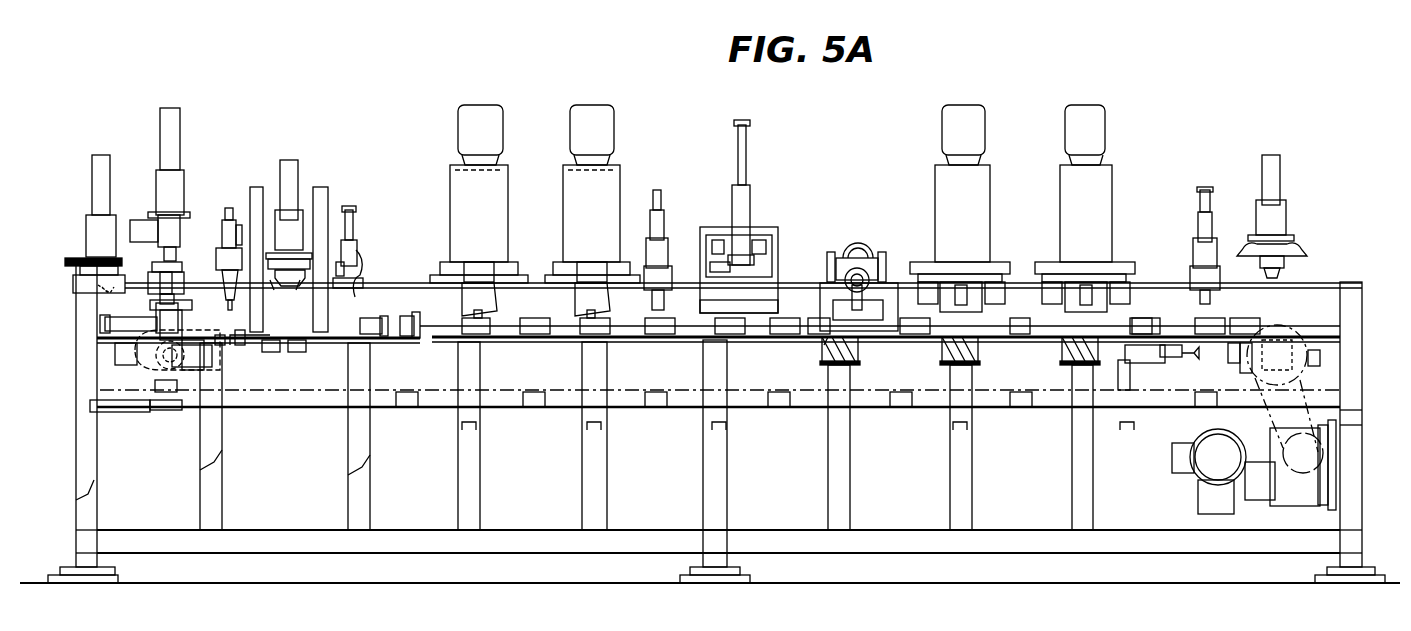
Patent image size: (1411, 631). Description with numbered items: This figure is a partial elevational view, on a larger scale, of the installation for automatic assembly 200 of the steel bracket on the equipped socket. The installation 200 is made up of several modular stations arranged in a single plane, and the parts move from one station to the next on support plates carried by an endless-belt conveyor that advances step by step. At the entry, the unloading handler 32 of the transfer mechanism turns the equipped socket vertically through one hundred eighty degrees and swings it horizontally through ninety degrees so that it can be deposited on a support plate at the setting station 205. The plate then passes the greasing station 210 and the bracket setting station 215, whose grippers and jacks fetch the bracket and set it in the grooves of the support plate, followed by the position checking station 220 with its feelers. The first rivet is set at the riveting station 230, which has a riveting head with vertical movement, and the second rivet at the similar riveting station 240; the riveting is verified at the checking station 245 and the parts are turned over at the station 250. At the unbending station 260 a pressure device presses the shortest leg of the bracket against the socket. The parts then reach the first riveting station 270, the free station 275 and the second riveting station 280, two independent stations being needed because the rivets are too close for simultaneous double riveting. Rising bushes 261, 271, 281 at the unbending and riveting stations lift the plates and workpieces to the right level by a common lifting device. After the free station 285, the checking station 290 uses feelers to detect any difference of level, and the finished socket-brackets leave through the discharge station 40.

The unloading handler 32 is at (88, 198).
The discharge station 40 is at (1282, 182).
The automatic assembly installation 200 is at (818, 188).
The setting station 205 is at (158, 141).
The greasing station 210 is at (222, 198).
The bracket setting station 215 is at (296, 171).
The position checking station 220 is at (353, 228).
The first rivet riveting station 230 is at (453, 141).
The second rivet riveting station 240 is at (611, 146).
The riveting checking station 245 is at (670, 215).
The turn-over station 250 is at (750, 248).
The unbending station 260 is at (869, 236).
The rising bush 261 is at (861, 366).
The first riveting station 270 is at (989, 149).
The rising bush 271 is at (979, 366).
The free station 275 is at (1020, 318).
The second riveting station 280 is at (1109, 148).
The rising bush 281 is at (1097, 368).
The free station 285 is at (1143, 318).
The riveting checking station 290 is at (1194, 186).